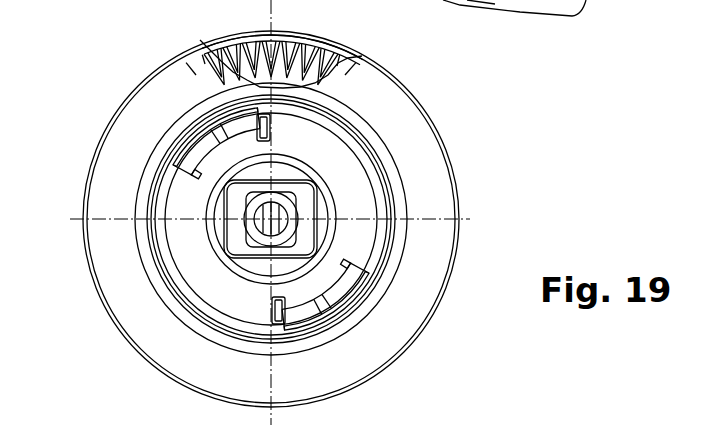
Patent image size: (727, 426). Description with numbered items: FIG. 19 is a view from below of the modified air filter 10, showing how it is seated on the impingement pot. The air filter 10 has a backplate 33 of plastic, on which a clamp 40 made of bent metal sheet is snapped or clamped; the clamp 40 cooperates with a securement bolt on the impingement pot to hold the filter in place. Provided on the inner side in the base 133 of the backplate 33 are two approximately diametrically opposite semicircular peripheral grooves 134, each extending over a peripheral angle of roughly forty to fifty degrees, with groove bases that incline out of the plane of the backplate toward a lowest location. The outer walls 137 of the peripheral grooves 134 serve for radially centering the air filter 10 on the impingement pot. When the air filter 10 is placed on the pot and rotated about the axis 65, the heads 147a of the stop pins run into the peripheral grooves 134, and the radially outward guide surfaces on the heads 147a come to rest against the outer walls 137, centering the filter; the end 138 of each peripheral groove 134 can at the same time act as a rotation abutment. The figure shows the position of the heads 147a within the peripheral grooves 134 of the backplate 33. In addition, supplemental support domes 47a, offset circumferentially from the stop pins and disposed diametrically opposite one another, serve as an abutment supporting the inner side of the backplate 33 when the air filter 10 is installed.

The air filter 10 is at (455, 138).
The backplate 33 is at (368, 202).
The clamp 40 is at (193, 202).
The support dome 47a is at (446, 2).
The axis 65 is at (270, 221).
The base of the backplate 133 is at (318, 150).
The peripheral groove 134 is at (193, 142).
The outer wall of the peripheral groove 137 is at (255, 127).
The end of the peripheral groove 138 is at (270, 127).
The head of the stop pin 147a is at (222, 115).